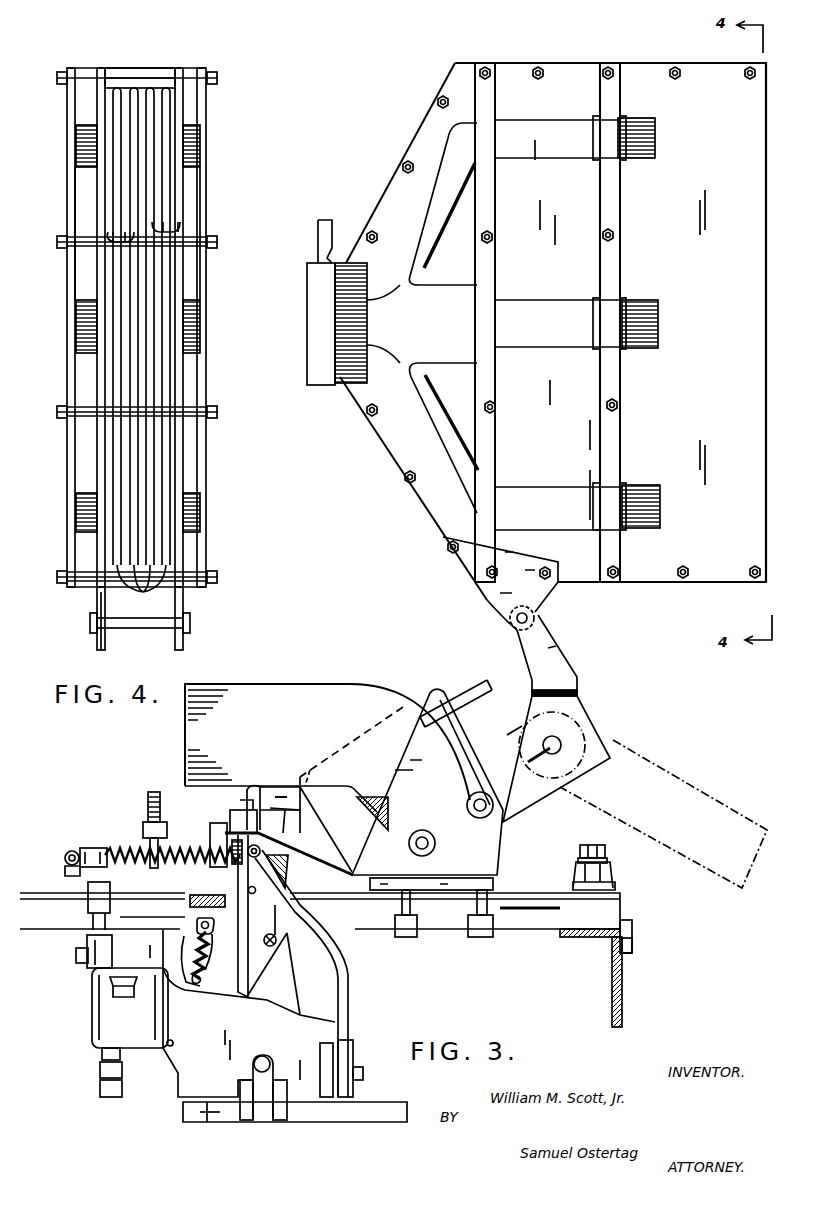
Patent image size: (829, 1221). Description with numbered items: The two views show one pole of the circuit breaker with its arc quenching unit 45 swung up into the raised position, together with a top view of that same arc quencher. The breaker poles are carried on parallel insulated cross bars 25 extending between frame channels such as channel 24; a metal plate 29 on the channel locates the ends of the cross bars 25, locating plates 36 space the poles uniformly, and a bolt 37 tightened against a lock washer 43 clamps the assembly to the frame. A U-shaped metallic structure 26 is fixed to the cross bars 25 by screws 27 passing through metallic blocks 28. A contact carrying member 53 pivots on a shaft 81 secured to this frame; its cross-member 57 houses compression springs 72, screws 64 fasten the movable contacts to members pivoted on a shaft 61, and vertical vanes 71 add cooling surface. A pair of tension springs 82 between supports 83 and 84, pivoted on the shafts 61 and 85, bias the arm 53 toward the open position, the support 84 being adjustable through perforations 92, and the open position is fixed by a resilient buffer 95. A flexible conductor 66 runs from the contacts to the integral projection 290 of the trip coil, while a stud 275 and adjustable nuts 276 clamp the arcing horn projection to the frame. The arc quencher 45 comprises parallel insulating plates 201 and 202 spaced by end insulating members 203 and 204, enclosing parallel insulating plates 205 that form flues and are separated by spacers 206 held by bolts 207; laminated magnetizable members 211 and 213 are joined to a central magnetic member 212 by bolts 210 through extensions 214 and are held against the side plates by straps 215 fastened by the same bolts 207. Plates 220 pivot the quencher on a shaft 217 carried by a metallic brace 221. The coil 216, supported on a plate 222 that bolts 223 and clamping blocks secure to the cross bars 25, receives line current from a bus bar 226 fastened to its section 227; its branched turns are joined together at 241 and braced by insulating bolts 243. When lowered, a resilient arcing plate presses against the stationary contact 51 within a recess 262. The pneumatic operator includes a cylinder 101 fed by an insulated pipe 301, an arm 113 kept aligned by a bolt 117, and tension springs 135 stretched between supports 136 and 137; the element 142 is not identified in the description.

In FIG. 4, the insulating plate 202 is at (100, 68).
In FIG. 3, the insulating plate 202 is at (718, 59).
In FIG. 4, the end insulating member 203 is at (130, 75).
In FIG. 4, the insulating plate 201 is at (179, 68).
In FIG. 4, the bolts 207 is at (217, 76).
In FIG. 3, the bolts 207 is at (493, 237).
In FIG. 4, the magnetizable member 211 is at (76, 143).
In FIG. 3, the magnetizable member 211 is at (644, 137).
In FIG. 4, the straps 215 is at (70, 205).
In FIG. 3, the straps 215 is at (618, 205).
In FIG. 4, the spacers 206 is at (168, 224).
In FIG. 4, the central magnetic member 212 is at (76, 326).
In FIG. 3, the central magnetic member 212 is at (658, 320).
In FIG. 4, the magnetizable member 213 is at (76, 511).
In FIG. 3, the magnetizable member 213 is at (490, 213).
In FIG. 4, the plates 220 is at (97, 598).
In FIG. 3, the plates 220 is at (460, 574).
In FIG. 4, the end insulating member 204 is at (100, 605).
In FIG. 4, the parallel insulating plates 205 is at (143, 594).
In FIG. 4, the metallic brace 221 is at (178, 636).
In FIG. 3, the metallic brace 221 is at (555, 655).
In FIG. 3, the arc quenching unit 45 is at (626, 330).
In FIG. 3, the extensions 214 is at (335, 275).
In FIG. 3, the bolts 210 is at (352, 265).
In FIG. 3, the shaft 217 is at (534, 618).
In FIG. 3, the coil section 227 is at (578, 706).
In FIG. 3, the bus bar 226 is at (672, 778).
In FIG. 3, the coil 216 is at (477, 706).
In FIG. 3, the insulating bolts 243 is at (470, 812).
In FIG. 3, the plate 222 is at (490, 880).
In FIG. 3, the bolts 223 is at (478, 900).
In FIG. 3, the cross bars 25 is at (620, 900).
In FIG. 3, the locating plates 36 is at (613, 874).
In FIG. 3, the lock washer 43 is at (607, 859).
In FIG. 3, the bolt 37 is at (598, 847).
In FIG. 3, the channel 24 is at (622, 978).
In FIG. 3, the metal plate 29 is at (632, 925).
In FIG. 3, the recess 262 is at (278, 686).
In FIG. 3, the stationary contact 51 is at (268, 795).
In FIG. 3, the cross-member 57 is at (240, 800).
In FIG. 3, the screws 64 is at (240, 812).
In FIG. 3, the vertical vanes 71 is at (212, 826).
In FIG. 3, the shaft 61 is at (280, 850).
In FIG. 3, the junction of coil sections 241 is at (310, 860).
In FIG. 3, the support 83 is at (262, 846).
In FIG. 3, the tension springs 82 is at (184, 847).
In FIG. 3, the support 84 is at (95, 848).
In FIG. 3, the perforations 92 is at (72, 851).
In FIG. 3, the shaft 85 is at (70, 872).
In FIG. 3, the stud 275 is at (154, 792).
In FIG. 3, the adjustable nuts 276 is at (145, 825).
In FIG. 3, the metallic blocks 28 is at (110, 890).
In FIG. 3, the compression springs 72 is at (222, 870).
In FIG. 3, the contact buffer 95 is at (248, 890).
In FIG. 3, the support 137 is at (198, 918).
In FIG. 3, the screws 27 is at (140, 917).
In FIG. 3, the U-shaped metallic structure 26 is at (262, 1040).
In FIG. 3, the contact carrying member 53 is at (285, 980).
In FIG. 3, the shaft 81 is at (277, 942).
In FIG. 3, the flexible conductor 66 is at (348, 963).
In FIG. 3, the integral projection 290 is at (325, 1045).
In FIG. 3, the pivot bracket 142 is at (264, 1125).
In FIG. 3, the arm 113 is at (203, 958).
In FIG. 3, the tension springs 135 is at (196, 987).
In FIG. 3, the support 136 is at (173, 1041).
In FIG. 3, the bolt 117 is at (76, 956).
In FIG. 3, the cylinder 101 is at (92, 1003).
In FIG. 3, the insulated pipe 301 is at (100, 1090).